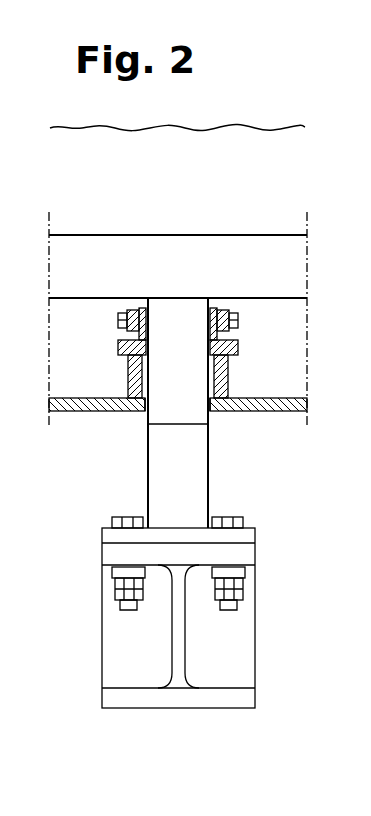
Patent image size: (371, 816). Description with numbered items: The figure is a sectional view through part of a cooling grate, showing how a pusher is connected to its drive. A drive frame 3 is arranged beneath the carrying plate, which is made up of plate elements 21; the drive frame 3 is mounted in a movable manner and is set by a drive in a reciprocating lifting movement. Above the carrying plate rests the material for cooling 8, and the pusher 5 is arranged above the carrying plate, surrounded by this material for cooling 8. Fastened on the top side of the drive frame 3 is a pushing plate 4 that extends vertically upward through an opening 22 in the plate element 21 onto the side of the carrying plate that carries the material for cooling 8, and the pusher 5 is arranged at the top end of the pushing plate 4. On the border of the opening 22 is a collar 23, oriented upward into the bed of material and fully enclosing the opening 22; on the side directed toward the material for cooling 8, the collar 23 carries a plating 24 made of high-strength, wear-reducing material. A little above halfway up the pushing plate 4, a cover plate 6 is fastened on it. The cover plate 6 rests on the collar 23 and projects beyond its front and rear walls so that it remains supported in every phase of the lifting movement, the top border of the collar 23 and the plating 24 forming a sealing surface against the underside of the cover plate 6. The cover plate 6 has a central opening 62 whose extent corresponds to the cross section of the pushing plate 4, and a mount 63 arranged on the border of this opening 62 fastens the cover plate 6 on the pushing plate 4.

The drive frame 3 is at (177, 637).
The pushing plate 4 is at (182, 458).
The pusher 5 is at (107, 253).
The cover plate 6 is at (238, 341).
The material for cooling 8 is at (242, 172).
The plate element 21 is at (73, 411).
The opening 22 is at (143, 412).
The collar 23 is at (128, 386).
The plating 24 is at (128, 370).
The central opening 62 is at (183, 340).
The mount 63 is at (216, 337).